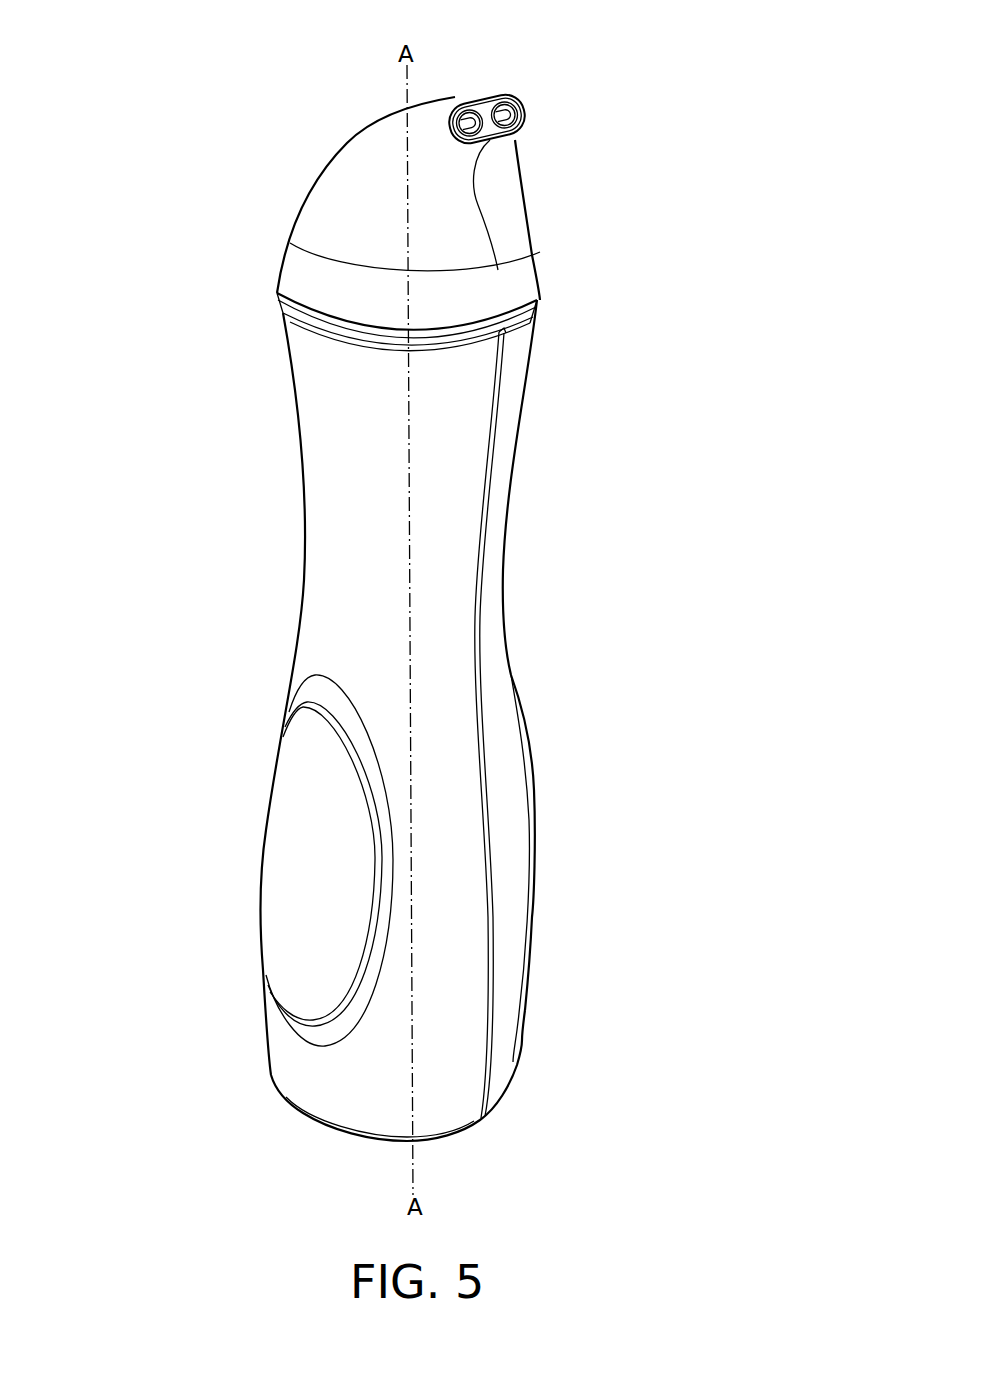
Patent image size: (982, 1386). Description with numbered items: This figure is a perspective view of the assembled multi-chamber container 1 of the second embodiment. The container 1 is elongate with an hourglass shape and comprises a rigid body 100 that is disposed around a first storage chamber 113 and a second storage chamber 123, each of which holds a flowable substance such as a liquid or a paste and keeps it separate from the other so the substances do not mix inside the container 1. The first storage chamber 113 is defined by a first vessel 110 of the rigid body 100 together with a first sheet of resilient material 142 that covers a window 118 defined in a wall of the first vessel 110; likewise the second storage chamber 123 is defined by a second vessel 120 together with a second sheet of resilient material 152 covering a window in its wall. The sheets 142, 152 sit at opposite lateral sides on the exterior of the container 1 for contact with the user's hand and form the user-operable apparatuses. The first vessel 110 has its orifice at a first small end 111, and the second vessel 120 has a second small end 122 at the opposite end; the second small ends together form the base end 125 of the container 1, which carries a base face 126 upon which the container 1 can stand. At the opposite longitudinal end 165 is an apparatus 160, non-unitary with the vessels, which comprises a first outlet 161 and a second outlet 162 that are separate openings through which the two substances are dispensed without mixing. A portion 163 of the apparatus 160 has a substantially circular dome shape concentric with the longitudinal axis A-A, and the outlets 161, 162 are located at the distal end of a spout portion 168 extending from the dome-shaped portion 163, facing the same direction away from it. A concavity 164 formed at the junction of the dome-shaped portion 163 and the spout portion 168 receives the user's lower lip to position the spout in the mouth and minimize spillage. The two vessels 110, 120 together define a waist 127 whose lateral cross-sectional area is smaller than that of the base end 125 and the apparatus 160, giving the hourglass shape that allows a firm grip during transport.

The container 1 is at (145, 240).
The rigid body 100 is at (258, 461).
The first vessel 110 is at (458, 403).
The first small end 111 is at (460, 1108).
The first storage chamber 113 is at (440, 627).
The window 118 is at (340, 1013).
The second vessel 120 is at (496, 498).
The second small end 122 is at (505, 1087).
The second storage chamber 123 is at (498, 574).
The base end 125 is at (543, 1053).
The base face 126 is at (397, 1149).
The waist 127 is at (267, 580).
The first sheet of resilient material 142 is at (352, 911).
The second sheet of resilient material 152 is at (534, 775).
The apparatus 160 is at (512, 222).
The first outlet 161 is at (480, 125).
The second outlet 162 is at (508, 112).
The dome-shaped portion 163 is at (353, 215).
The concavity 164 is at (502, 167).
The longitudinal end 165 is at (297, 132).
The spout portion 168 is at (473, 93).